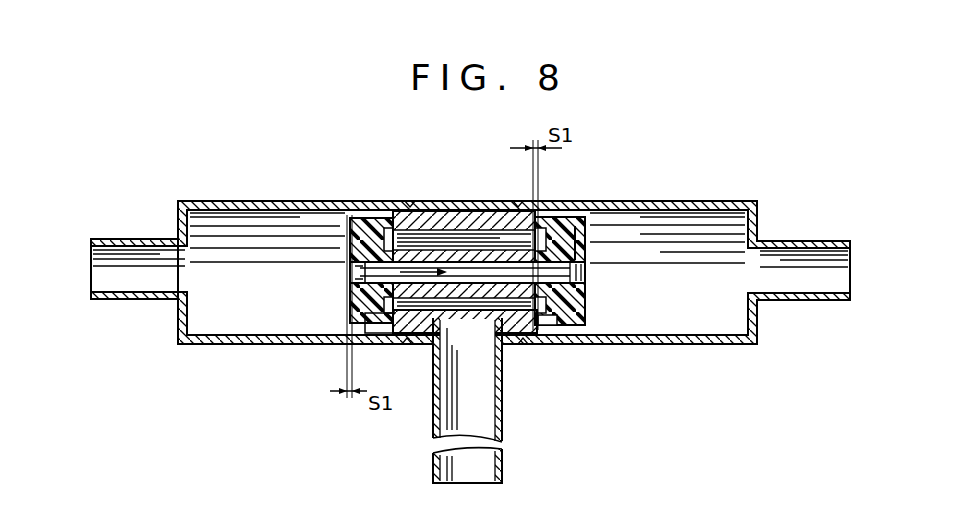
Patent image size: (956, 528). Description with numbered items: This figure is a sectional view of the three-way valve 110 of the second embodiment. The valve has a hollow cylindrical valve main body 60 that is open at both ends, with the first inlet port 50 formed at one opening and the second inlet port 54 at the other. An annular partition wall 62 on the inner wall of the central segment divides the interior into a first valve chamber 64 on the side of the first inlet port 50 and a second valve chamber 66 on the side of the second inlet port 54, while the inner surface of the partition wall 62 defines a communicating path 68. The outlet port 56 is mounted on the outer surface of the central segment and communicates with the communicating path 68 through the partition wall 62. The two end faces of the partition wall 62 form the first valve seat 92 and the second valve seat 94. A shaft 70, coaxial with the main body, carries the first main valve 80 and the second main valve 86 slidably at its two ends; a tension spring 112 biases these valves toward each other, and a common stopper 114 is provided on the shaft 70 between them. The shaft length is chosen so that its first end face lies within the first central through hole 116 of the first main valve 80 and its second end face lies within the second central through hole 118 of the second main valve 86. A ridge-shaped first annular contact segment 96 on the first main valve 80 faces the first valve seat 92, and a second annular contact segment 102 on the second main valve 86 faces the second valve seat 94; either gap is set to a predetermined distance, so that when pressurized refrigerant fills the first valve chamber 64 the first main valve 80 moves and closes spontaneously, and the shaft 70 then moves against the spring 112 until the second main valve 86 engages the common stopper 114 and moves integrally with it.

The first inlet port 50 is at (127, 240).
The second inlet port 54 is at (800, 242).
The outlet port 56 is at (503, 419).
The valve main body 60 is at (240, 206).
The partition wall 62 is at (439, 213).
The first valve chamber 64 is at (218, 333).
The second valve chamber 66 is at (715, 333).
The communicating path 68 is at (470, 213).
The shaft 70 is at (586, 248).
The first main valve 80 is at (370, 341).
The second main valve 86 is at (586, 305).
The first valve seat 92 is at (394, 212).
The second valve seat 94 is at (546, 214).
The first annular contact segment 96 is at (384, 212).
The second annular contact segment 102 is at (563, 216).
The three-way valve 110 is at (305, 190).
The tension spring 112 is at (508, 342).
The common stopper 114 is at (470, 320).
The first central through hole 116 is at (354, 273).
The second central through hole 118 is at (572, 274).